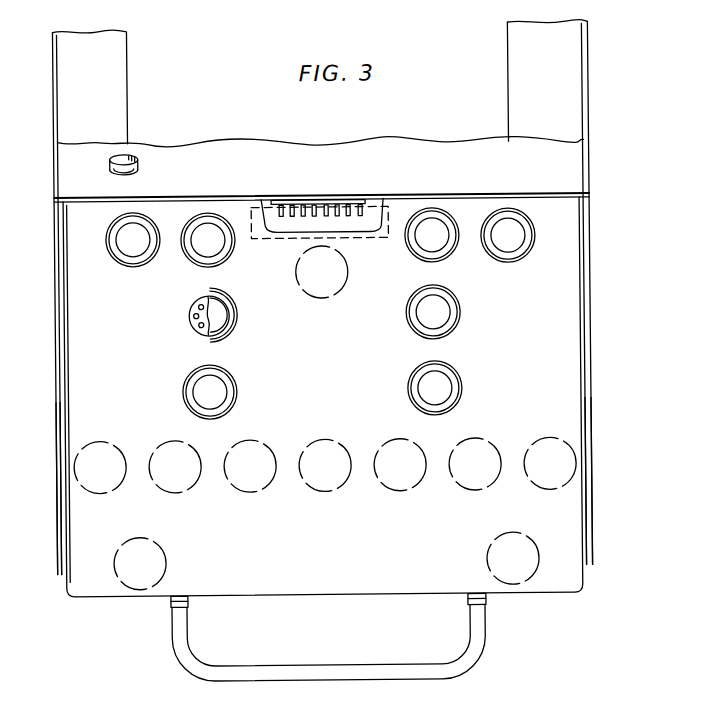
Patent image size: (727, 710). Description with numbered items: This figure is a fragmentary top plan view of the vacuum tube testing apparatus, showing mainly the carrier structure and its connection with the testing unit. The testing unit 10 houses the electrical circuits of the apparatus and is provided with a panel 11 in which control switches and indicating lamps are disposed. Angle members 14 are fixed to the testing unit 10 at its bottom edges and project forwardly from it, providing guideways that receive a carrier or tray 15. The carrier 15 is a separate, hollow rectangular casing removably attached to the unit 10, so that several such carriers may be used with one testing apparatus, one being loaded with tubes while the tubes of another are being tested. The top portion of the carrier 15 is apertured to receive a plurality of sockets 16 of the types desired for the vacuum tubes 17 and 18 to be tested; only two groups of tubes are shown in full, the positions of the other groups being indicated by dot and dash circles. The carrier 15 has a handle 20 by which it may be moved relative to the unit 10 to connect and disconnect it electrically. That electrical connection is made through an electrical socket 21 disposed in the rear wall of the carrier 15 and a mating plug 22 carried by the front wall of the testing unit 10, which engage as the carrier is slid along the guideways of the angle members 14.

The testing unit 10 is at (573, 171).
The panel 11 is at (356, 140).
The angle members 14 is at (60, 497).
The carrier or tray 15 is at (558, 572).
The sockets 16 is at (195, 318).
The vacuum tubes 17 is at (142, 240).
The vacuum tubes 18 is at (445, 237).
The handle 20 is at (375, 665).
The electrical socket 21 is at (350, 225).
The plug 22 is at (342, 197).